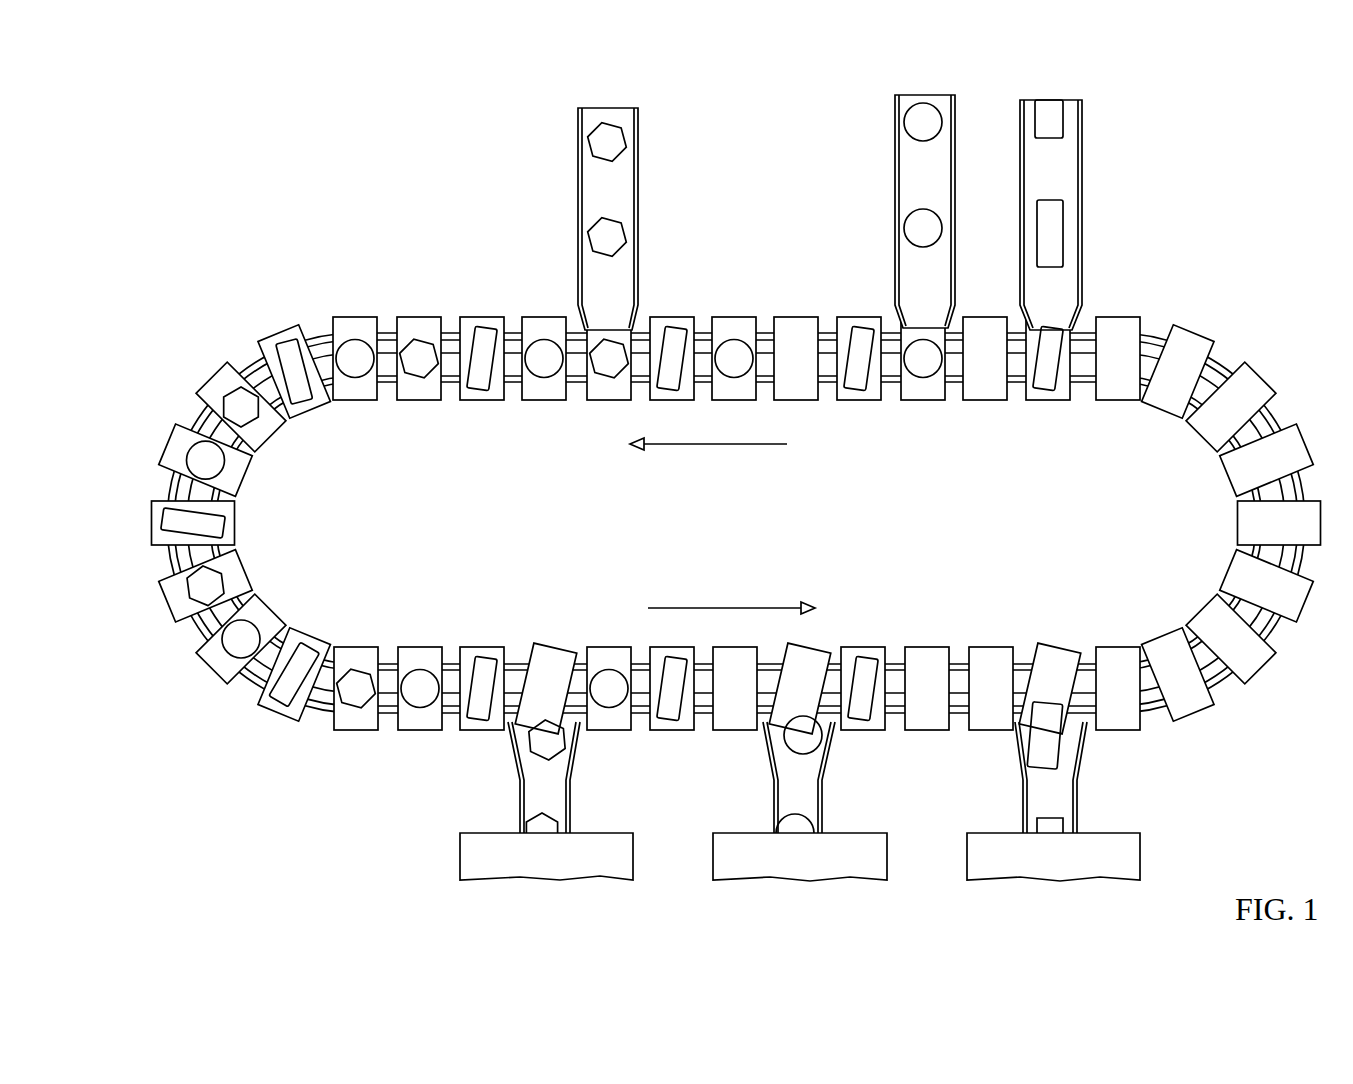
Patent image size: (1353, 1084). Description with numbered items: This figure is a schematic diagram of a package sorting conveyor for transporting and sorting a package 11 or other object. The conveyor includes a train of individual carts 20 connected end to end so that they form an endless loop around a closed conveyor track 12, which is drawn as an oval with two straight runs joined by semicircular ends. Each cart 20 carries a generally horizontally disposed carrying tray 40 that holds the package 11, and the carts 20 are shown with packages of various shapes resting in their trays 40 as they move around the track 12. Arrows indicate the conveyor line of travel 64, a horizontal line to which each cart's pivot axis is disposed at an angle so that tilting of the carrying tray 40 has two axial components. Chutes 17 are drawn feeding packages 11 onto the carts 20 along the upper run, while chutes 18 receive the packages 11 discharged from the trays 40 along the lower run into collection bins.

The package 11 is at (612, 145).
The conveyor track 12 is at (1218, 357).
The input chute 17 is at (640, 210).
The output chute 18 is at (572, 817).
The cart 20 is at (368, 637).
The carrying tray 40 is at (350, 657).
The conveyor line of travel 64 is at (713, 446).